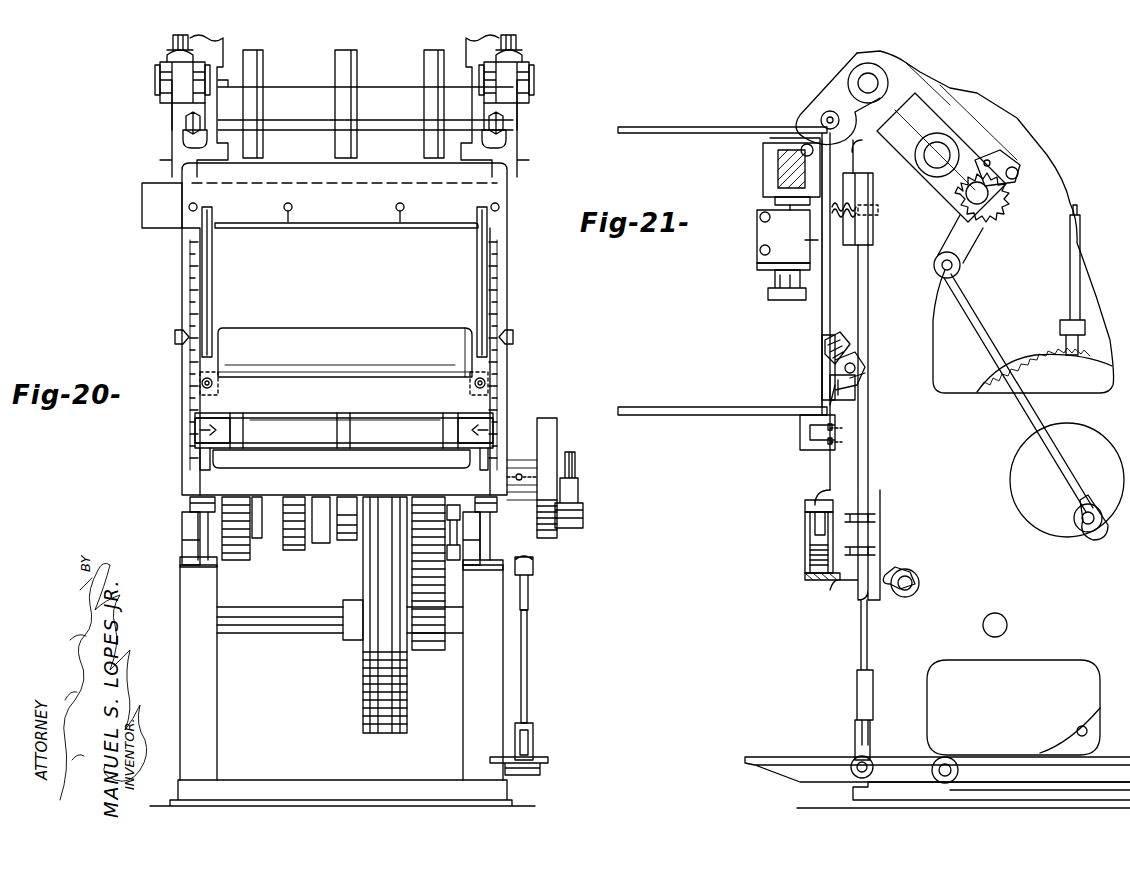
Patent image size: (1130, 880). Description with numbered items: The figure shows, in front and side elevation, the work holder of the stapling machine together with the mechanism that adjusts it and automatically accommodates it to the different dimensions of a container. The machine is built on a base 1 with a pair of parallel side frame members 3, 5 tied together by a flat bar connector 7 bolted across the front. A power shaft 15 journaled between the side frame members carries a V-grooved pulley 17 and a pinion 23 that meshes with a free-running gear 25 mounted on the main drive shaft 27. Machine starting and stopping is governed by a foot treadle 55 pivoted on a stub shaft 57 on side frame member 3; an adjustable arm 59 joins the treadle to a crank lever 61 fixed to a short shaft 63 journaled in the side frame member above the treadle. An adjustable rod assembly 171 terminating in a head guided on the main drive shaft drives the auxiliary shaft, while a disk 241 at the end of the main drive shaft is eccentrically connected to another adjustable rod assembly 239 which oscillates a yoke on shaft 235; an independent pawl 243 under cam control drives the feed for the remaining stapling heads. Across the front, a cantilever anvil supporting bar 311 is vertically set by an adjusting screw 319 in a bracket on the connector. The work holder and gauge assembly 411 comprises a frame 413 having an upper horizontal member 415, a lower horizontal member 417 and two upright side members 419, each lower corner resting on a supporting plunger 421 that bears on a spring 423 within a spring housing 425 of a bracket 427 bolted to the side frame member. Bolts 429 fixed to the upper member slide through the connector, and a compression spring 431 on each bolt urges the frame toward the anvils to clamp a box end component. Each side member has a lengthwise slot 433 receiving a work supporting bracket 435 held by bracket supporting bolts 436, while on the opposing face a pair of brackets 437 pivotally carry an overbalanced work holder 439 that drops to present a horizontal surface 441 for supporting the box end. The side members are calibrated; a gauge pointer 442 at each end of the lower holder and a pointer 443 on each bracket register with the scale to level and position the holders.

In FIG. 20, the base 1 is at (301, 788).
In FIG. 20, the side frame member 3 is at (478, 706).
In FIG. 21, the side frame member 3 is at (1076, 585).
In FIG. 20, the side frame member 5 is at (185, 657).
In FIG. 20, the flat bar connector 7 is at (152, 197).
In FIG. 21, the flat bar connector 7 is at (866, 195).
In FIG. 20, the power shaft 15 is at (282, 630).
In FIG. 21, the power shaft 15 is at (1008, 627).
In FIG. 20, the pulley 17 is at (363, 692).
In FIG. 21, the pulley 17 is at (1080, 730).
In FIG. 20, the pinion 23 is at (428, 645).
In FIG. 21, the free-running gear 25 is at (1043, 353).
In FIG. 21, the main drive shaft 27 is at (1055, 487).
In FIG. 20, the foot treadle 55 is at (540, 757).
In FIG. 21, the foot treadle 55 is at (773, 756).
In FIG. 21, the stub shaft 57 is at (958, 771).
In FIG. 20, the adjustable arm 59 is at (530, 665).
In FIG. 21, the adjustable arm 59 is at (855, 690).
In FIG. 21, the crank lever 61 is at (893, 573).
In FIG. 21, the short shaft 63 is at (920, 580).
In FIG. 21, the adjustable rod assembly 171 is at (1069, 270).
In FIG. 21, the shaft 235 is at (992, 195).
In FIG. 20, the adjustable rod assembly 239 is at (576, 470).
In FIG. 21, the adjustable rod assembly 239 is at (1020, 402).
In FIG. 20, the disk 241 is at (550, 437).
In FIG. 21, the disk 241 is at (1020, 465).
In FIG. 21, the pawl 243 is at (1002, 162).
In FIG. 21, the anvil supporting bar 311 is at (778, 172).
In FIG. 21, the vertical adjusting screw 319 is at (772, 283).
In FIG. 20, the work holder and gauge assembly 411 is at (402, 319).
In FIG. 21, the work holder and gauge assembly 411 is at (823, 318).
In FIG. 20, the frame 413 is at (182, 270).
In FIG. 21, the frame 413 is at (825, 468).
In FIG. 20, the upper horizontal member 415 is at (338, 209).
In FIG. 20, the lower horizontal member 417 is at (300, 477).
In FIG. 20, the upright side member 419 is at (188, 296).
In FIG. 20, the supporting plunger 421 is at (190, 509).
In FIG. 21, the supporting plunger 421 is at (823, 522).
In FIG. 21, the spring 423 is at (805, 560).
In FIG. 20, the spring housing 425 is at (196, 539).
In FIG. 21, the spring housing 425 is at (805, 535).
In FIG. 20, the bracket 427 is at (193, 568).
In FIG. 21, the bracket 427 is at (838, 583).
In FIG. 20, the bolts 429 is at (291, 222).
In FIG. 21, the bolts 429 is at (882, 226).
In FIG. 21, the compression spring 431 is at (843, 217).
In FIG. 20, the lengthwise slot 433 is at (208, 292).
In FIG. 20, the work supporting bracket 435 is at (255, 420).
In FIG. 21, the work supporting bracket 435 is at (805, 432).
In FIG. 21, the bracket supporting bolts 436 is at (842, 440).
In FIG. 20, the brackets 437 is at (218, 392).
In FIG. 21, the brackets 437 is at (848, 393).
In FIG. 20, the work holder 439 is at (318, 340).
In FIG. 21, the work holder 439 is at (862, 346).
In FIG. 21, the horizontal surface 441 is at (840, 338).
In FIG. 20, the gauge pointer 442 is at (218, 430).
In FIG. 20, the pointer 443 is at (174, 338).